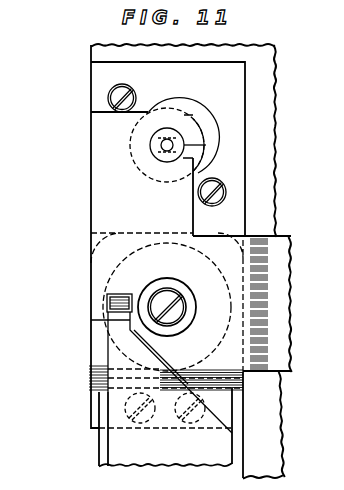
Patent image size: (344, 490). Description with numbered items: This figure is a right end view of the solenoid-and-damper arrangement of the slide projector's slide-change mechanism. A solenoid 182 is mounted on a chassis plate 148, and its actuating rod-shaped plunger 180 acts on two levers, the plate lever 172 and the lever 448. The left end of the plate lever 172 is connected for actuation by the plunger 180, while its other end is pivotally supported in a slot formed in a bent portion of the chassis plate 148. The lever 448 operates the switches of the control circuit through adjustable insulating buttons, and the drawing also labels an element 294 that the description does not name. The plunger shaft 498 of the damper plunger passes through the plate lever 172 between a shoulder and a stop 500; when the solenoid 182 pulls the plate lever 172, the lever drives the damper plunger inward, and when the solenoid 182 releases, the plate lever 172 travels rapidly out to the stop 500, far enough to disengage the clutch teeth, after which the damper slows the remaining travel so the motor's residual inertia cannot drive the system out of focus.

The chassis plate 148 is at (262, 139).
The plate lever 172 is at (113, 184).
The cam 294 is at (168, 106).
The plunger shaft 498 is at (150, 143).
The stop 500 is at (205, 148).
The solenoid 182 is at (120, 268).
The actuating rod-shaped plunger 180 is at (172, 307).
The lever 448 is at (122, 445).